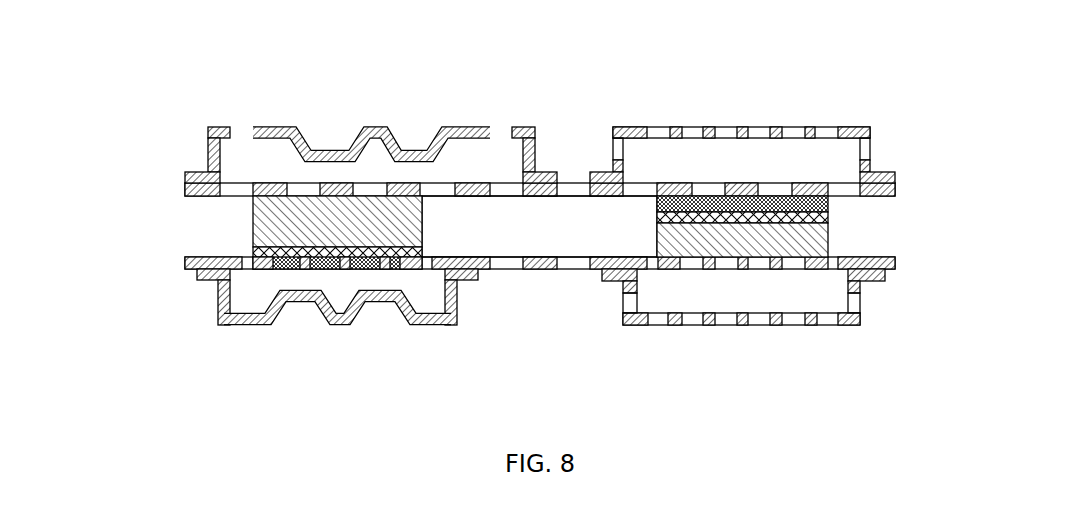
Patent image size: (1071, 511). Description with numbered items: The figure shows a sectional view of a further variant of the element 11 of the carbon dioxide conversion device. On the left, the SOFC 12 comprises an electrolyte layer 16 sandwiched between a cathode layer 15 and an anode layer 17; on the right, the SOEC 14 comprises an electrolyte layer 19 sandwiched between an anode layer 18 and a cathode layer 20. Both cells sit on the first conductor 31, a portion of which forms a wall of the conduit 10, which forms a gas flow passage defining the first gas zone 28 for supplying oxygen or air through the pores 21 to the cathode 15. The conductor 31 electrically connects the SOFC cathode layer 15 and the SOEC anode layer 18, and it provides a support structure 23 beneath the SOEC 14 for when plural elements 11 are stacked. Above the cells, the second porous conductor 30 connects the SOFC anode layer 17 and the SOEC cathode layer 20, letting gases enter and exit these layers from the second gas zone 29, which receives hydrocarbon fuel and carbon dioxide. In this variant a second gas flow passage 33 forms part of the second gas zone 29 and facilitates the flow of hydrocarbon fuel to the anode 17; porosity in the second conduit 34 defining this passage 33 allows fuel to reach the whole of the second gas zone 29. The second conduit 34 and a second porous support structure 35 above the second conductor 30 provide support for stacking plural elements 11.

The conduit 10 is at (218, 304).
The element 11 is at (163, 85).
The SOFC 12 is at (246, 276).
The SOEC 14 is at (822, 221).
The cathode layer 15 is at (268, 307).
The electrolyte layer 16 is at (300, 253).
The anode layer 17 is at (253, 213).
The anode layer 18 is at (828, 240).
The electrolyte layer 19 is at (828, 218).
The cathode layer 20 is at (828, 203).
The pores 21 is at (353, 269).
The support structure 23 is at (862, 325).
The first gas zone 28 is at (440, 300).
The second gas zone 29 is at (530, 238).
The second porous conductor 30 is at (557, 184).
The first conductor 31 is at (545, 269).
The second gas flow passage 33 is at (483, 173).
The second conduit 34 is at (363, 128).
The second porous support structure 35 is at (862, 127).